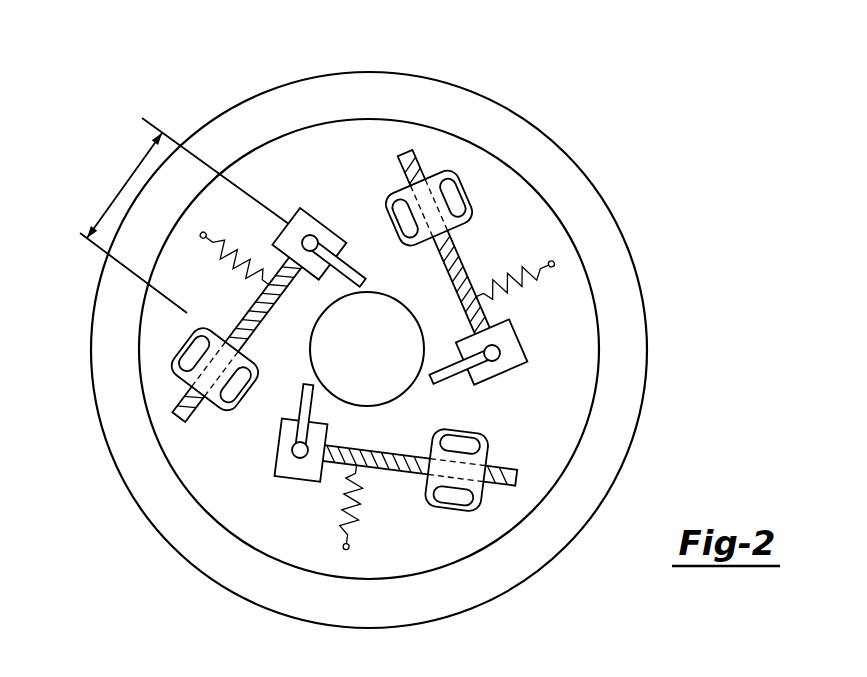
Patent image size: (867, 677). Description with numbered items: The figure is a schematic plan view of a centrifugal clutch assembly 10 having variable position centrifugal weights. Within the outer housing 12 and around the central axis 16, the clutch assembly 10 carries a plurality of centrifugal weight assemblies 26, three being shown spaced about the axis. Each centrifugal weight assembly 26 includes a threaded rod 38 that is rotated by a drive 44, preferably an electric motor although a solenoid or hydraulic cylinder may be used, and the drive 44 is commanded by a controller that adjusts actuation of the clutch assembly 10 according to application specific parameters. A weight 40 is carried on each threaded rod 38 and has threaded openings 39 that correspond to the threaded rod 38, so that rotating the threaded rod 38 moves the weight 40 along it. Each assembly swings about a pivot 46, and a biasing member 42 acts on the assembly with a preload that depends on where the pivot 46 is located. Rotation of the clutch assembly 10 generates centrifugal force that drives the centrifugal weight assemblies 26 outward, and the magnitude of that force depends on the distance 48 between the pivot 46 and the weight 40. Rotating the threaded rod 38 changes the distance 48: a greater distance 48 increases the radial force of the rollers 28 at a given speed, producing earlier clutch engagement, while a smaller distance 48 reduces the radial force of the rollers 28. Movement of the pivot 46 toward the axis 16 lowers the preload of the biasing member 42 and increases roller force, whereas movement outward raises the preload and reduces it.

The clutch assembly 10 is at (118, 62).
The housing drum 12 is at (536, 139).
The axis 16 is at (383, 358).
The centrifugal weight assembly 26 is at (512, 262).
The roller 28 is at (463, 498).
The threaded rod 38 is at (490, 313).
The threaded opening 39 is at (432, 161).
The weight 40 is at (463, 178).
The biasing member 42 is at (555, 279).
The drive 44 is at (530, 350).
The pivot 46 is at (512, 368).
The distance 48 is at (117, 190).